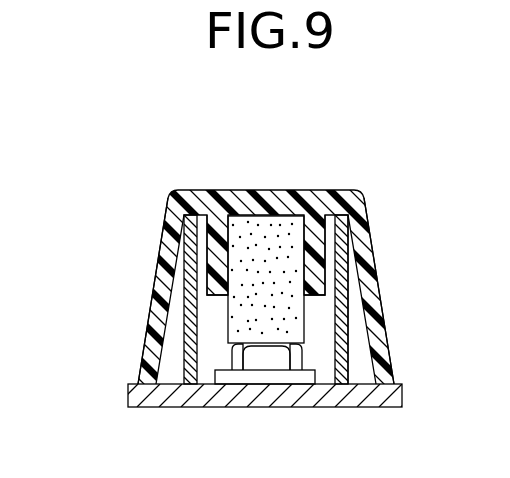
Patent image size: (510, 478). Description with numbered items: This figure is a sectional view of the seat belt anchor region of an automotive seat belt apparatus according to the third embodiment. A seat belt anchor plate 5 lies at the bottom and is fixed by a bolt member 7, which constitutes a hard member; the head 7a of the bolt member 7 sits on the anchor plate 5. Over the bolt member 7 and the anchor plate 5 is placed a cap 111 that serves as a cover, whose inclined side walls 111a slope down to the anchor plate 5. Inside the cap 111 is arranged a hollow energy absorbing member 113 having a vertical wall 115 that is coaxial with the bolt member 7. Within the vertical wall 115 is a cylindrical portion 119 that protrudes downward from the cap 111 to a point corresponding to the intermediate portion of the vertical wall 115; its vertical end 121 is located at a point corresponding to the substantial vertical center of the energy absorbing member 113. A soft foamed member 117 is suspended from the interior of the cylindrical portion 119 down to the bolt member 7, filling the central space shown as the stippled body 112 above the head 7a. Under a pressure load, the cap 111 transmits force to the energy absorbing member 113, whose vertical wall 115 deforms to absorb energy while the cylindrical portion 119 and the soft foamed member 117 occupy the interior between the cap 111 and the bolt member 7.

The seat belt anchor plate 5 is at (147, 398).
The bolt member 7 is at (277, 362).
The head of the bolt member 7a is at (260, 362).
The cap 111 is at (372, 189).
The side wall of cap 111a is at (158, 256).
The piezoelectric element 112 is at (273, 222).
The energy absorbing member 113 is at (348, 338).
The vertical wall 115 is at (348, 285).
The soft foamed member 117 is at (245, 233).
The cylindrical portion 119 is at (232, 250).
The vertical end of the cylindrical portion 121 is at (215, 297).